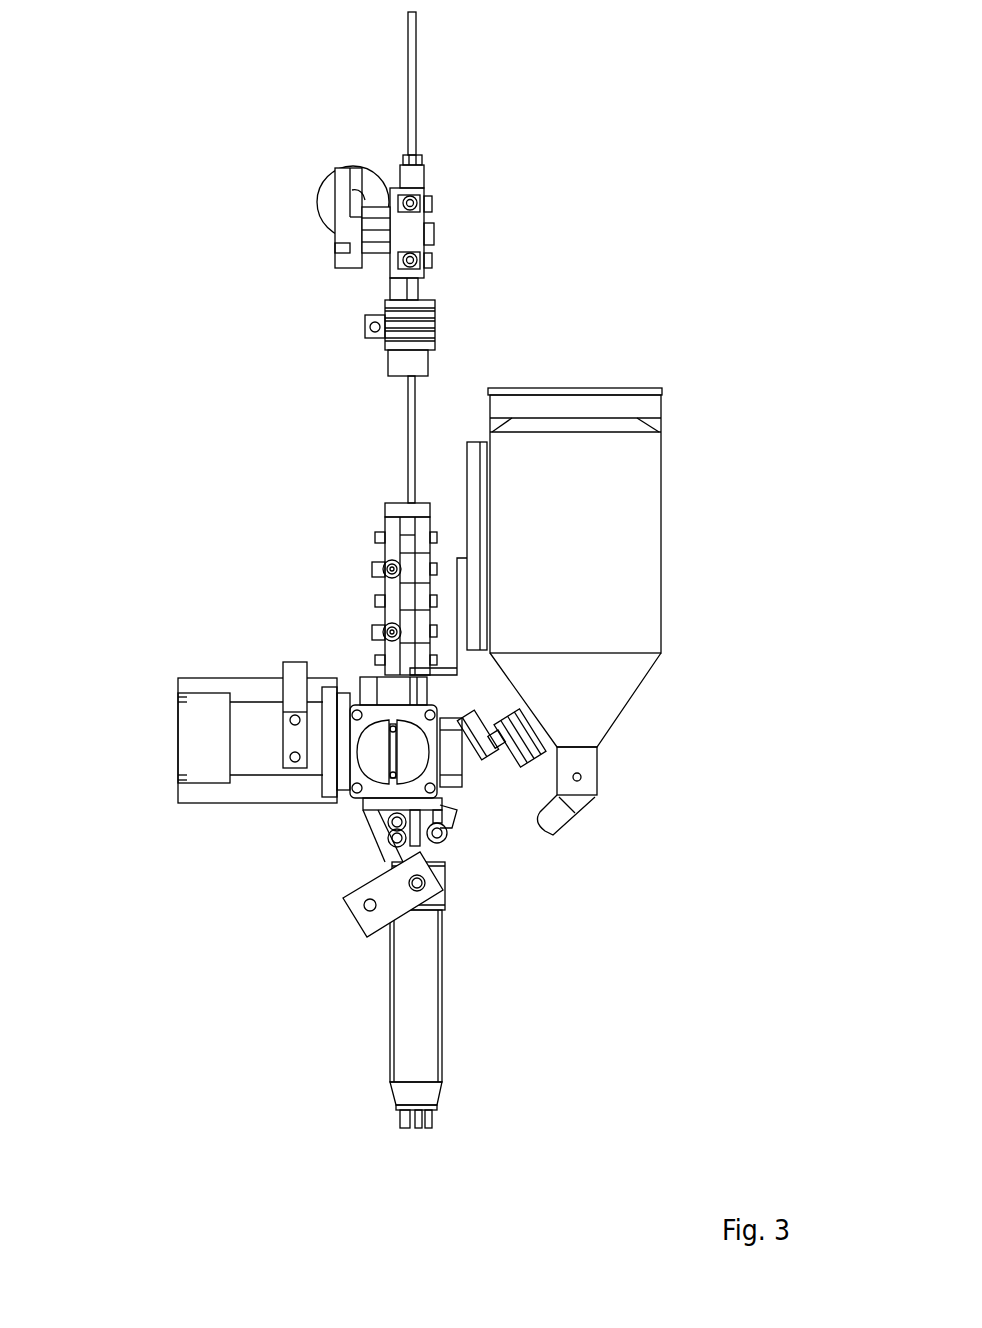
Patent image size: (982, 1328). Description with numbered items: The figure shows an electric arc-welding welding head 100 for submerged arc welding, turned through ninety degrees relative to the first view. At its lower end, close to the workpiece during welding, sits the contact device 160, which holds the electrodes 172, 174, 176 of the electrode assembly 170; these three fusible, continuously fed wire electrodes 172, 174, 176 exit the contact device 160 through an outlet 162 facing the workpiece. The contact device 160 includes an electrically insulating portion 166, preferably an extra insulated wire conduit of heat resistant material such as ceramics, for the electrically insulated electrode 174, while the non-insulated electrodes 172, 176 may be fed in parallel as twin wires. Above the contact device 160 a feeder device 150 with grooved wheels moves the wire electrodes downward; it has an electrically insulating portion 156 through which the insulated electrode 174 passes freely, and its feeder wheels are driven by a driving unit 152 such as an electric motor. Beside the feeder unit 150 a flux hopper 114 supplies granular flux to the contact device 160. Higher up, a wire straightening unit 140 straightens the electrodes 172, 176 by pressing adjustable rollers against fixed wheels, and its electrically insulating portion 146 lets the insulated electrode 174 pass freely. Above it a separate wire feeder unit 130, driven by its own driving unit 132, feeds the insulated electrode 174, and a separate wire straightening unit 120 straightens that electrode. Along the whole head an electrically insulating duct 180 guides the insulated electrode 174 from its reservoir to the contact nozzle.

The electric arc-welding welding head 100 is at (567, 162).
The flux hopper 114 is at (661, 535).
The wire straightening unit 120 is at (425, 161).
The wire feeder unit 130 is at (440, 240).
The driving unit 132 is at (327, 195).
The wire straightening unit 140 is at (300, 589).
The electrically insulating portion 146 is at (355, 587).
The feeder device 150 is at (562, 759).
The electrically insulating portion 156 is at (473, 700).
The driving unit 152 is at (195, 738).
The contact device 160 is at (491, 967).
The electrically insulating portion 166 is at (445, 993).
The outlet 162 is at (402, 1093).
The electrode assembly 170 is at (443, 1164).
The wire electrode 172 is at (397, 1122).
The electrically insulated electrode 174 is at (417, 1130).
The wire electrode 176 is at (433, 1120).
The electrically insulating duct 180 is at (408, 83).